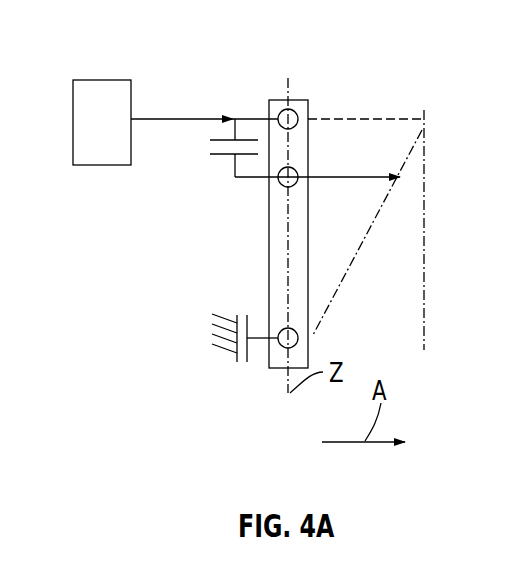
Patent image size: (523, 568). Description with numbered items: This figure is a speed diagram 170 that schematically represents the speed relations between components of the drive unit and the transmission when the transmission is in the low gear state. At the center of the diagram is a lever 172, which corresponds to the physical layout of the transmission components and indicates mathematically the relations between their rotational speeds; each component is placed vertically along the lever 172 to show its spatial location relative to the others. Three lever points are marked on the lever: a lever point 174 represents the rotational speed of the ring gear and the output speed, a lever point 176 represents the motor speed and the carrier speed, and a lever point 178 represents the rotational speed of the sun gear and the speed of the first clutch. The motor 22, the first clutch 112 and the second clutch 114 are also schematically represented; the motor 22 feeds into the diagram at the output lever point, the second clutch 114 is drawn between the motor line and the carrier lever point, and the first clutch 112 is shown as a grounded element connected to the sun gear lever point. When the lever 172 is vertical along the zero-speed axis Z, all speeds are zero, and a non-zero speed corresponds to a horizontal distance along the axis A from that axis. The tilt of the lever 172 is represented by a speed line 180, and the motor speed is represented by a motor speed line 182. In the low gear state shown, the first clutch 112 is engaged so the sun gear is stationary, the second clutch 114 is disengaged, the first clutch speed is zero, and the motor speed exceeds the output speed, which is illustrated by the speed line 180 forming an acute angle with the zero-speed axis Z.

The motor 22 is at (97, 148).
The first clutch 112 is at (236, 345).
The second clutch 114 is at (217, 157).
The speed diagram 170 is at (236, 48).
The lever 172 is at (271, 262).
The lever point 174 is at (280, 115).
The lever point 176 is at (286, 184).
The lever point 178 is at (278, 337).
The speed line 180 is at (333, 310).
The motor speed line 182 is at (424, 222).